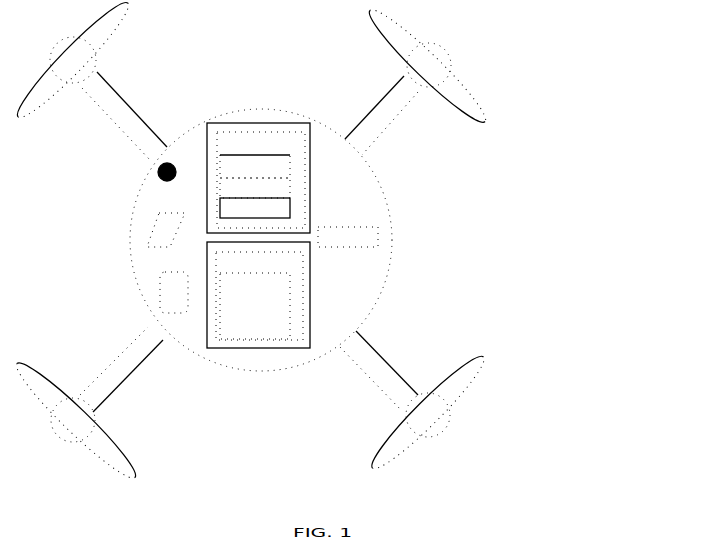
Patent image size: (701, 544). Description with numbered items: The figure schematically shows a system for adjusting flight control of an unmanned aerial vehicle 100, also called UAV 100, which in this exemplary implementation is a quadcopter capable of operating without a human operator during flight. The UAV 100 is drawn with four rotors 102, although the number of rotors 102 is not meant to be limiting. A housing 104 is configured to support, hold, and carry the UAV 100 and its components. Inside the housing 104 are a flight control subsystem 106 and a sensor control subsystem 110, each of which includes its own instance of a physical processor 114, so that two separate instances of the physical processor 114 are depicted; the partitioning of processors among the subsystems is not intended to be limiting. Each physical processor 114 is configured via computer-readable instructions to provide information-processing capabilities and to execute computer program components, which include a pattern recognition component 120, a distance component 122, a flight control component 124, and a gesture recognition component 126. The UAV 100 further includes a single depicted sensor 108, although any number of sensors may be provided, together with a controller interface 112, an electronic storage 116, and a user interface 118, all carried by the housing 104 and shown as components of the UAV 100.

The unmanned aerial vehicle 100 is at (481, 456).
The rotors 102 is at (463, 388).
The housing 104 is at (137, 268).
The flight control subsystem 106 is at (222, 115).
The sensor 108 is at (155, 173).
The sensor control subsystem 110 is at (238, 350).
The controller interface 112 is at (379, 235).
The physical processor 114 is at (285, 132).
The electronic storage 116 is at (160, 300).
The user interface 118 is at (140, 233).
The pattern recognition component 120 is at (294, 282).
The distance component 122 is at (294, 164).
The flight control component 124 is at (294, 186).
The gesture recognition component 126 is at (294, 206).